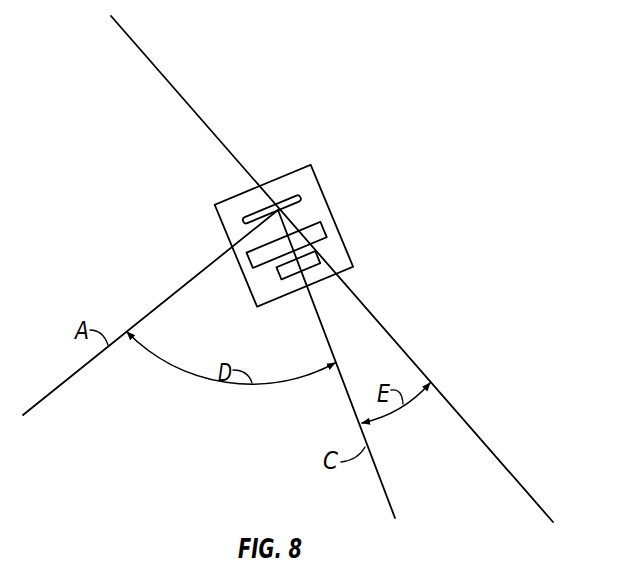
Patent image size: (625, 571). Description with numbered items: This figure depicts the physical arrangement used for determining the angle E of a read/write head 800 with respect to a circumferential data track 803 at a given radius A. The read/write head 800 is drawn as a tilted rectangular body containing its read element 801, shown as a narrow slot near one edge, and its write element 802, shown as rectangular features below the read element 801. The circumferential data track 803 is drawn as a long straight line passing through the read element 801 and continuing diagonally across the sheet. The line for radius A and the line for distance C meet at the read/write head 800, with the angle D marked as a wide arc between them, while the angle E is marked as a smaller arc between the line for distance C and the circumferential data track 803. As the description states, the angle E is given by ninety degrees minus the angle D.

The read/write head 800 is at (320, 207).
The read element 801 is at (285, 198).
The write element 802 is at (328, 253).
The circumferential data track 803 is at (173, 85).